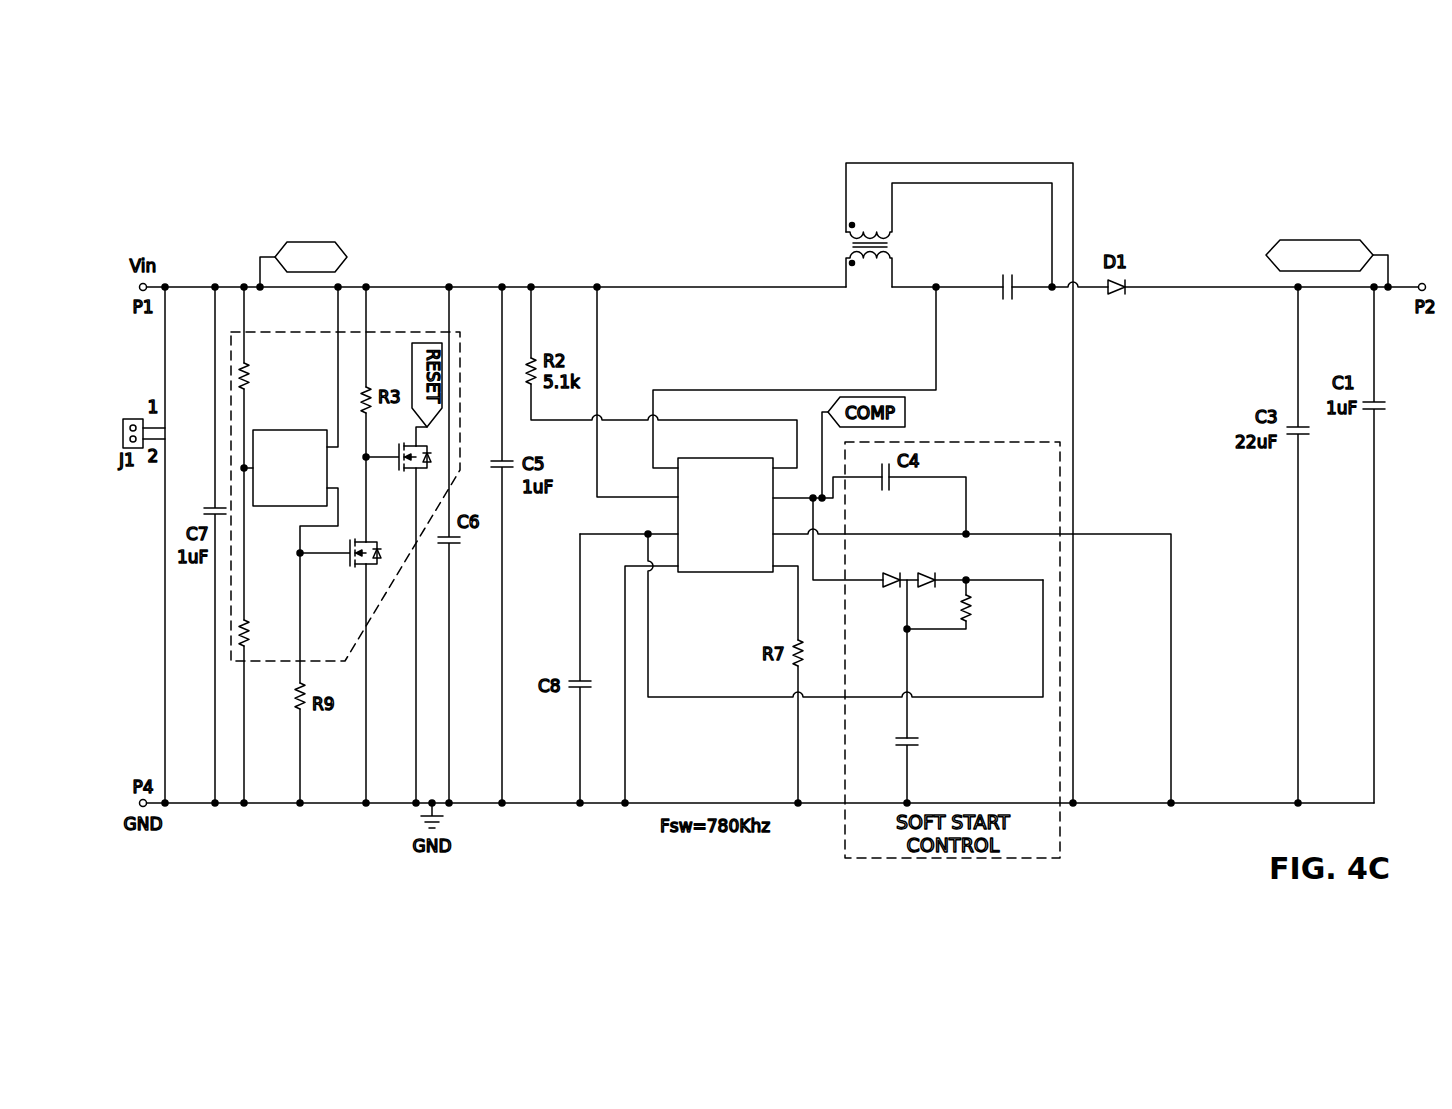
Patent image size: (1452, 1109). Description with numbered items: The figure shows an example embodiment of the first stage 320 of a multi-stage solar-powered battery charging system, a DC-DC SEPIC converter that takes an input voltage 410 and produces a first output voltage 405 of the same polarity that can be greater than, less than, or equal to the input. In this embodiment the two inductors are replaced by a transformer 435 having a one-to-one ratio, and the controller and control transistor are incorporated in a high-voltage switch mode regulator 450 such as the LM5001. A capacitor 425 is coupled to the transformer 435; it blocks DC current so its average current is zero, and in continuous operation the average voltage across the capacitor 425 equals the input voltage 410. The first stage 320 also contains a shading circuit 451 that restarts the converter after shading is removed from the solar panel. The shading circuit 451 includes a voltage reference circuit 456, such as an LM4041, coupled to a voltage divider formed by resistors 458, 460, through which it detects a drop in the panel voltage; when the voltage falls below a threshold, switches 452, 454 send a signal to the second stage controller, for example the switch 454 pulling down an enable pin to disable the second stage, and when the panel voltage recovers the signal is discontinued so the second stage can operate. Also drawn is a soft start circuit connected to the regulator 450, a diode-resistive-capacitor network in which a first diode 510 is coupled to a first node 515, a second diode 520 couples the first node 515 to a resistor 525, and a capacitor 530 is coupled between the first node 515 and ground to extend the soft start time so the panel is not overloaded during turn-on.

The first stage 320 is at (1330, 150).
The first output voltage 405 is at (1424, 283).
The input voltage 410 is at (338, 246).
The capacitor 425 is at (1003, 293).
The transformer 435 is at (872, 228).
The high-voltage switch mode regulator 450 is at (745, 530).
The shading circuit 451 is at (387, 333).
The switch 452 is at (343, 563).
The switch 454 is at (393, 467).
The voltage reference circuit 456 is at (273, 480).
The resistor 458 is at (255, 373).
The resistor 460 is at (249, 620).
The first diode 510 is at (882, 588).
The first node 515 is at (910, 637).
The second diode 520 is at (928, 572).
The resistor 525 is at (970, 618).
The capacitor 530 is at (915, 748).